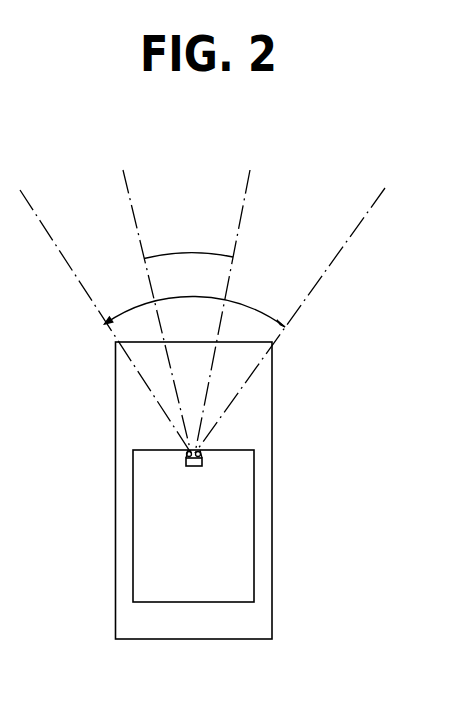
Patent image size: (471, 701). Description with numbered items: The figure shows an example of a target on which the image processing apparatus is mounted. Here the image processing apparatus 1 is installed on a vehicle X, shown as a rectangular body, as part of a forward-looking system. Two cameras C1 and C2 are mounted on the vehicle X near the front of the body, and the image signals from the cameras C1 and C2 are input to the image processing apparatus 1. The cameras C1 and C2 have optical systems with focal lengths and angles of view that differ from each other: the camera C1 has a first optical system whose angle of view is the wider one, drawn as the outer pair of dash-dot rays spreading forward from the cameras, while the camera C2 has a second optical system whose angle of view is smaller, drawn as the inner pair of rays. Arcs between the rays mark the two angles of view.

The image processing apparatus 1 is at (186, 461).
The vehicle X is at (272, 484).
The camera C1 is at (200, 453).
The camera C2 is at (186, 453).